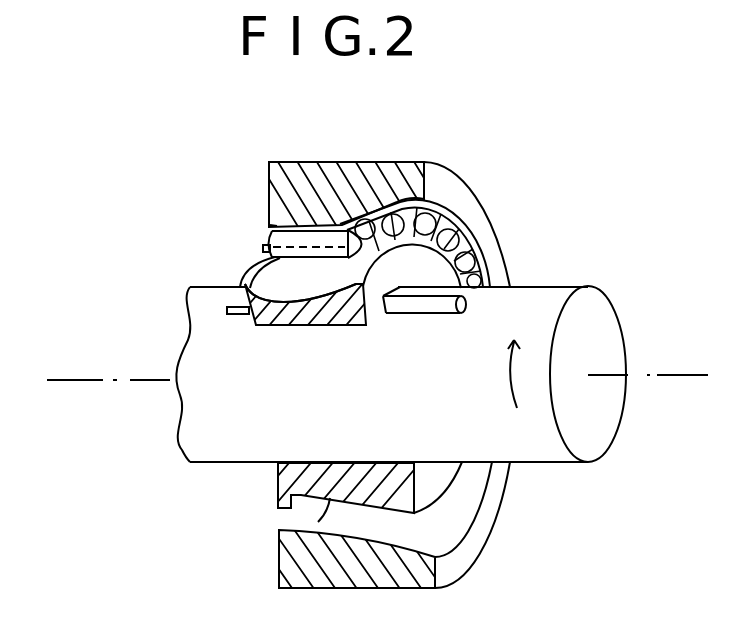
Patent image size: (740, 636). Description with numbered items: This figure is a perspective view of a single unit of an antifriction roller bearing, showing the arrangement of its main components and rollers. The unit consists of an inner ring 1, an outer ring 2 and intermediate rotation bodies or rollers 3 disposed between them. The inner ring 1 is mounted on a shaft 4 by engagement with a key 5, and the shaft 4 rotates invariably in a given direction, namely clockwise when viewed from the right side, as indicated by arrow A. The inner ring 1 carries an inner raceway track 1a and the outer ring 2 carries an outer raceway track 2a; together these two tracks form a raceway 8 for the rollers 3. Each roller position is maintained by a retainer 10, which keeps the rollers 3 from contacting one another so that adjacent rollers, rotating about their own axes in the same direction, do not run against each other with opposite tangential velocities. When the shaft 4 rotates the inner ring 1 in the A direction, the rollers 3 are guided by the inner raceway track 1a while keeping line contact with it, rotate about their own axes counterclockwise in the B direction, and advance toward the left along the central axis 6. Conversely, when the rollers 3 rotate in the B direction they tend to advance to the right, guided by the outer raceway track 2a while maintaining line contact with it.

The inner ring 1 is at (270, 327).
The inner raceway track 1a is at (333, 279).
The outer ring 2 is at (393, 165).
The outer raceway track 2a is at (333, 176).
The rollers 3 is at (266, 245).
The shaft 4 is at (543, 292).
The key 5 is at (427, 310).
The central axis 6 is at (130, 383).
The raceway 8 is at (330, 528).
The retainer 10 is at (246, 276).
The direction of shaft rotation A is at (525, 390).
The direction of roller rotation B is at (277, 226).